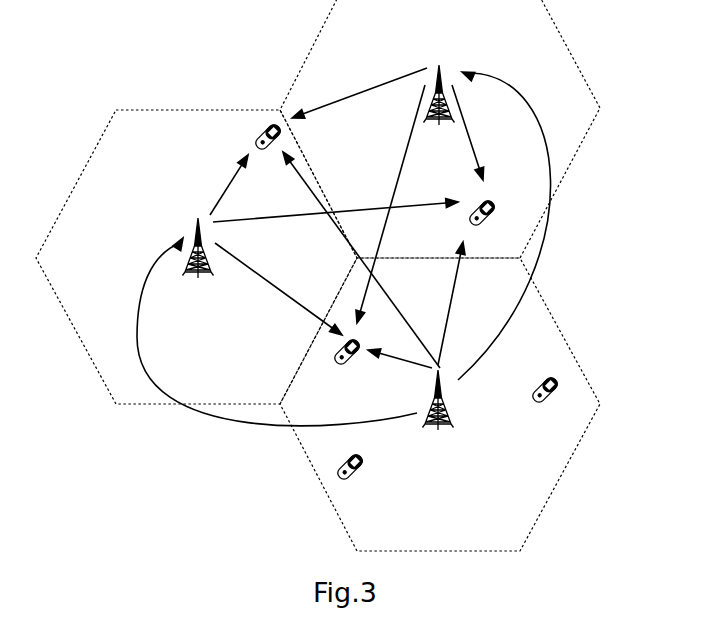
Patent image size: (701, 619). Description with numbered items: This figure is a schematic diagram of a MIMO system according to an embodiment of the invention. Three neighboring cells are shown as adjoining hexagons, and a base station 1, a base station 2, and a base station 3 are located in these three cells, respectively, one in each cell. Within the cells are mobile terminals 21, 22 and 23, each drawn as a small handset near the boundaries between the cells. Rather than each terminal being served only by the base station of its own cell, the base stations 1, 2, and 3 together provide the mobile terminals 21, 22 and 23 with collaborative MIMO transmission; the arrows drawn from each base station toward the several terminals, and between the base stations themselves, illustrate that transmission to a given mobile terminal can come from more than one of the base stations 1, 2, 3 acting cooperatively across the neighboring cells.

The base station 1 is at (198, 262).
The base station 2 is at (439, 109).
The base station 3 is at (438, 414).
The mobile terminal 21 is at (268, 150).
The mobile terminal 22 is at (482, 226).
The mobile terminal 23 is at (347, 367).